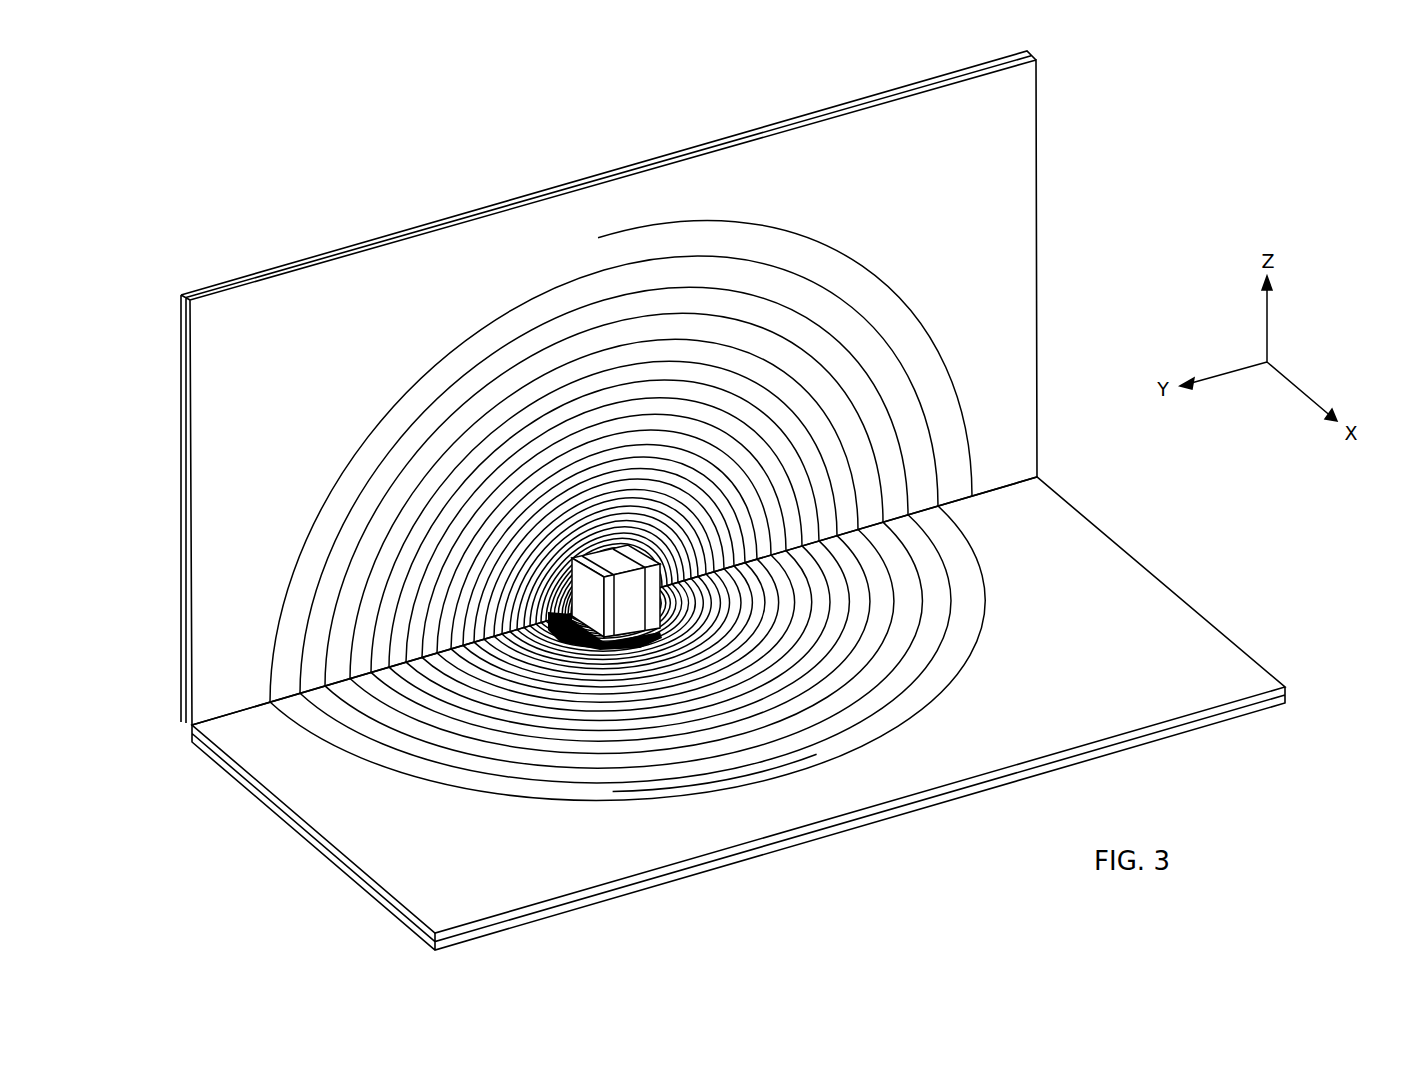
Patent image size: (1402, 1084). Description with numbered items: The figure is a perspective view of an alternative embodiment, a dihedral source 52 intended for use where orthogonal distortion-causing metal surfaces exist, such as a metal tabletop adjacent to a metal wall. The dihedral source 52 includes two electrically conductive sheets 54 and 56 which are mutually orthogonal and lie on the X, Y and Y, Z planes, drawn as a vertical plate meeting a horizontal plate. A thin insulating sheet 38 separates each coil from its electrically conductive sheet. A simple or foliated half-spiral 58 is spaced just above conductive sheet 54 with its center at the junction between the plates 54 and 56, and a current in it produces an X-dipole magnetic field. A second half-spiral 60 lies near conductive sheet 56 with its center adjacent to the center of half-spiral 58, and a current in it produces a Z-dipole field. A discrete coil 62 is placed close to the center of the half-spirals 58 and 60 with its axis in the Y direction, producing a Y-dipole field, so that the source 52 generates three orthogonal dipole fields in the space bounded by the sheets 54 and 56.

The thin insulating sheet 38 is at (190, 646).
The dihedral source 52 is at (730, 500).
The electrically conductive sheet 54 is at (613, 392).
The electrically conductive sheet 56 is at (738, 705).
The half-spiral 58 is at (898, 297).
The half-spiral 60 is at (977, 557).
The discrete coil 62 is at (607, 550).